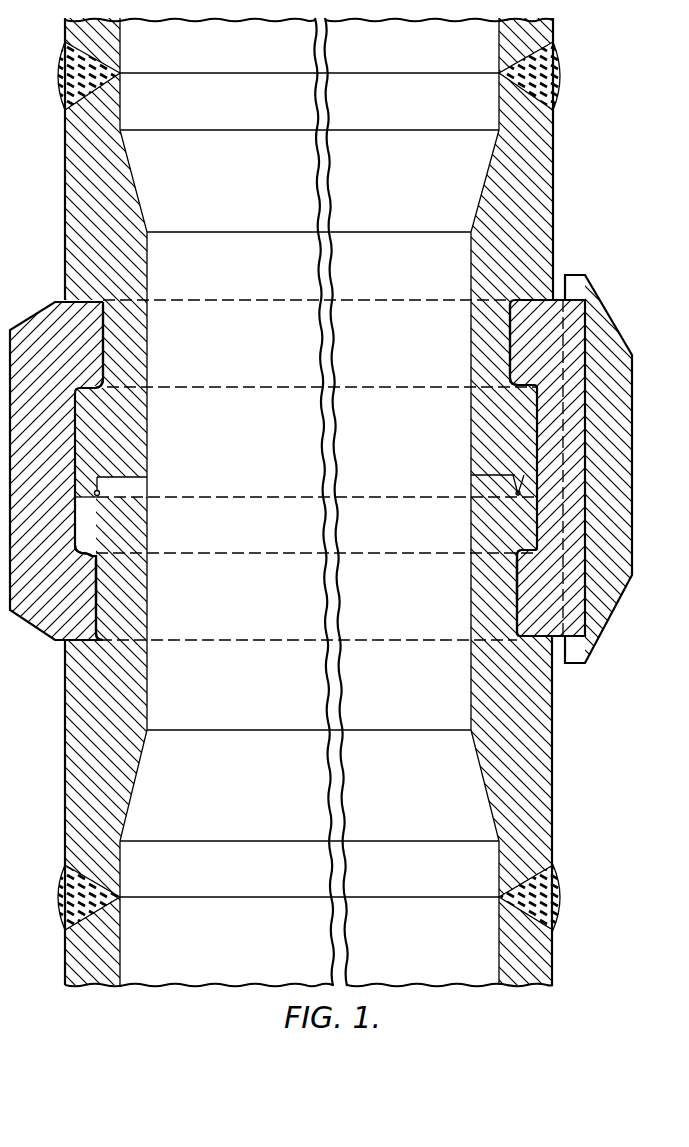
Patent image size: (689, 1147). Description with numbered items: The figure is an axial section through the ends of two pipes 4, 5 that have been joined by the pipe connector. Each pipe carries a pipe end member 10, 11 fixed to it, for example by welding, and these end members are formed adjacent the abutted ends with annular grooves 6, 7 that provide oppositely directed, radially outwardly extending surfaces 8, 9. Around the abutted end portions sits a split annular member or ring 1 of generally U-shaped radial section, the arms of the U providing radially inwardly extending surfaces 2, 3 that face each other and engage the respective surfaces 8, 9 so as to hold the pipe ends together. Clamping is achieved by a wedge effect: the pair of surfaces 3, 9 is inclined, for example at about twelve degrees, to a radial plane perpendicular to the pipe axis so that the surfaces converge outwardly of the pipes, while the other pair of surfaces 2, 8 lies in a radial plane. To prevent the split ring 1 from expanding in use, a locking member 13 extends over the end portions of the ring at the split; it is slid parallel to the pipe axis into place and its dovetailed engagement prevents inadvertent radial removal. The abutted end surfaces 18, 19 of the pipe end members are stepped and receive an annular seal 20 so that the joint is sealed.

The split annular member 1 is at (40, 600).
The radially inwardly extending surface 2 is at (100, 390).
The radially inwardly extending surface 3 is at (82, 551).
The pipe 4 is at (110, 42).
The pipe 5 is at (100, 960).
The annular groove 6 is at (103, 336).
The annular groove 7 is at (97, 604).
The radially outwardly extending surface 8 is at (105, 382).
The radially outwardly extending surface 9 is at (97, 570).
The pipe end member 10 is at (115, 207).
The pipe end member 11 is at (133, 700).
The locking member 13 is at (608, 578).
The abutted end surface 18 is at (232, 476).
The abutted end surface 19 is at (283, 466).
The annular seal 20 is at (515, 492).